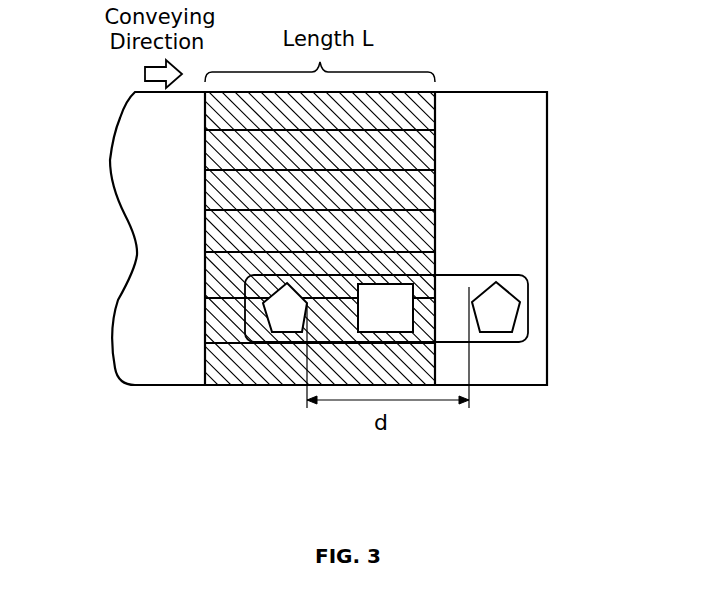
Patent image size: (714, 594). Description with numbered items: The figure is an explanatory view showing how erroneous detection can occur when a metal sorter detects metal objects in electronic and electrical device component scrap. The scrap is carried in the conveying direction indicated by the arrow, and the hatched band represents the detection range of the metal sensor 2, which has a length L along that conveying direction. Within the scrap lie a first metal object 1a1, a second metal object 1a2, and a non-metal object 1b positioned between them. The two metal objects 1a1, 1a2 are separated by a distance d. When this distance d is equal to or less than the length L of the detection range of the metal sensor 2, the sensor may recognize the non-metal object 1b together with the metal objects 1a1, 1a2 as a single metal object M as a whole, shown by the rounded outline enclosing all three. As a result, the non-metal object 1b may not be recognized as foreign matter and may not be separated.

The metal sensor 2 is at (500, 375).
The single metal object M is at (502, 343).
The metal object 1a1 is at (528, 292).
The metal object 1a2 is at (305, 290).
The non-metal object 1b is at (415, 285).